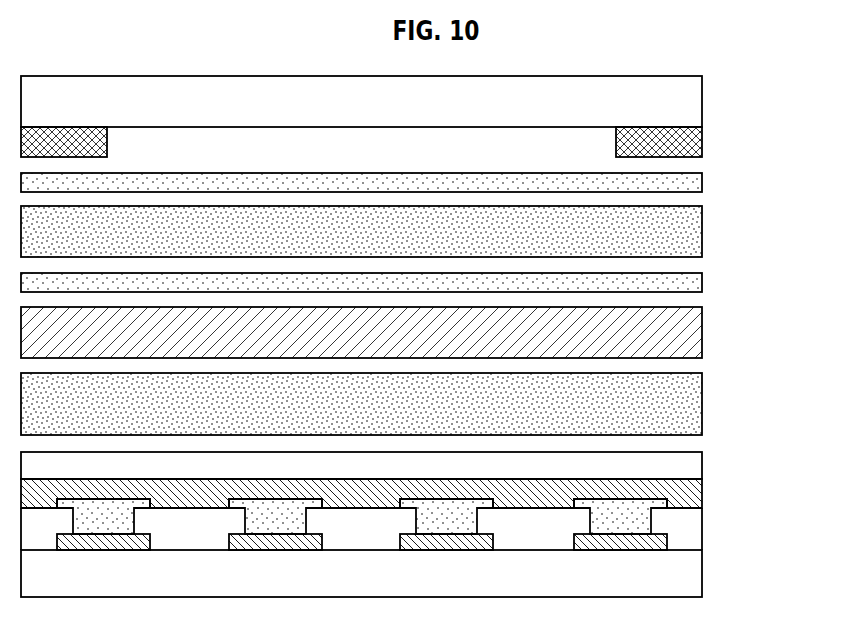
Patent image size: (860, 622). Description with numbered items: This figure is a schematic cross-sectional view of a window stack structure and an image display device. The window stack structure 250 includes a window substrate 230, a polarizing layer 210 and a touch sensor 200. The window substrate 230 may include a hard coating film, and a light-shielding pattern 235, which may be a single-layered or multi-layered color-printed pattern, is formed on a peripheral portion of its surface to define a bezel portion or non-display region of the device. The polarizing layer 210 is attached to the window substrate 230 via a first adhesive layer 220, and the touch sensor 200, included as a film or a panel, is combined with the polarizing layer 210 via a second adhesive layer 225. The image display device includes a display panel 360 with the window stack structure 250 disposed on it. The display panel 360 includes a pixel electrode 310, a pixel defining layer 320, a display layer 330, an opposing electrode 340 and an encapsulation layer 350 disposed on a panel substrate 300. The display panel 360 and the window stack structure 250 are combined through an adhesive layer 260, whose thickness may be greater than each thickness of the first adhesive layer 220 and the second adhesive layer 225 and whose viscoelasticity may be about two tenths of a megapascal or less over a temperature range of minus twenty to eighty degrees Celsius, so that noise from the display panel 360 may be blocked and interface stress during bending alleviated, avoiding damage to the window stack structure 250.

The touch sensor 200 is at (705, 325).
The polarizing layer 210 is at (697, 230).
The first adhesive layer 220 is at (705, 177).
The second adhesive layer 225 is at (705, 278).
The window substrate 230 is at (698, 103).
The light-shielding pattern 235 is at (705, 137).
The window stack structure 250 is at (796, 95).
The adhesive layer 260 is at (697, 398).
The panel substrate 300 is at (697, 575).
The pixel electrode 310 is at (667, 537).
The pixel defining layer 320 is at (697, 518).
The display layer 330 is at (700, 502).
The opposing electrode 340 is at (697, 495).
The encapsulation layer 350 is at (695, 465).
The display panel 360 is at (796, 435).